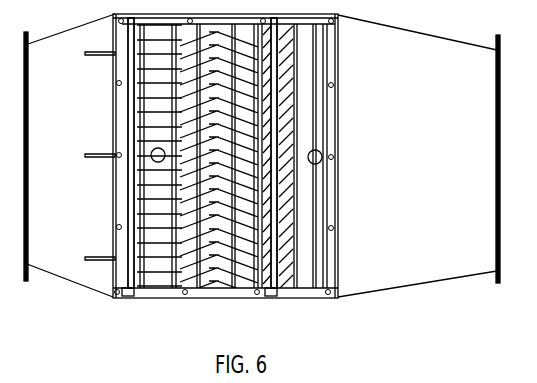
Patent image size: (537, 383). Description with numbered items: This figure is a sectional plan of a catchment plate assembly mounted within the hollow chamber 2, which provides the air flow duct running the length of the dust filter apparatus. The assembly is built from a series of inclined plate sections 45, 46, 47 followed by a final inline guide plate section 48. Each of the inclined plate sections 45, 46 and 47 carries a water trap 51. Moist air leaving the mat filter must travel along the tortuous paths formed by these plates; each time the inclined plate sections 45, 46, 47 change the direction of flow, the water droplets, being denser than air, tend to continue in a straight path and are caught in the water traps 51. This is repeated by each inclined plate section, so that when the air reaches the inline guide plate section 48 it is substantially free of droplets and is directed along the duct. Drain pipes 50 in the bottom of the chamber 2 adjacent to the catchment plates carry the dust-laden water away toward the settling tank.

The hollow chamber 2 is at (422, 286).
The inclined plate section 45 is at (296, 263).
The inclined plate section 46 is at (240, 256).
The inclined plate section 47 is at (193, 276).
The inline guide plate section 48 is at (150, 252).
The drain pipes 50 is at (152, 149).
The water trap 51 is at (192, 248).